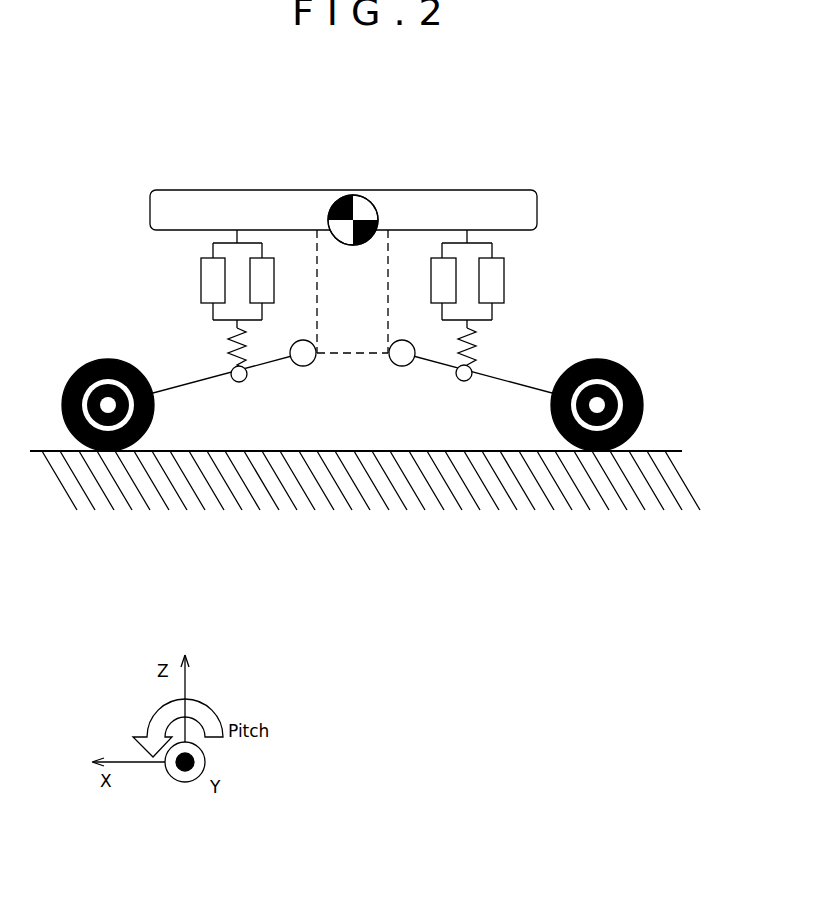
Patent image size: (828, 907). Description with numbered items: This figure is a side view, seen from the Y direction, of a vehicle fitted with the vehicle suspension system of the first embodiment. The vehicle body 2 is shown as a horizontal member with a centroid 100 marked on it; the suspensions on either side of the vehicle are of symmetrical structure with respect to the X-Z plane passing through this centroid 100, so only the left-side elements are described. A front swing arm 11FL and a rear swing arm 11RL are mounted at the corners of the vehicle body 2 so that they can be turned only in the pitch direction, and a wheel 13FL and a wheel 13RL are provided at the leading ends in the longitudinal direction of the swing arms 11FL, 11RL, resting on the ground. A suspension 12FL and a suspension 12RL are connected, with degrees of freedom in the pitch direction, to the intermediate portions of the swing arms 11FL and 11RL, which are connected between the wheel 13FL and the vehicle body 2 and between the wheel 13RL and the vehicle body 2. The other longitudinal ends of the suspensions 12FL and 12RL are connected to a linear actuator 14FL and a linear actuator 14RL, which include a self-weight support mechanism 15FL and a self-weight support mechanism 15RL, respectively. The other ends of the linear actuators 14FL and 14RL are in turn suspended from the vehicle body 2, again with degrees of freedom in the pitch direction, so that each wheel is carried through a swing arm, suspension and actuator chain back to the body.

The vehicle body 2 is at (413, 189).
The centroid 100 is at (368, 196).
The swing arm 11FL is at (155, 398).
The swing arm 11RL is at (538, 392).
The suspension 12FL is at (203, 381).
The suspension 12RL is at (495, 378).
The wheel 13FL is at (70, 376).
The wheel 13RL is at (642, 413).
The linear actuator 14FL is at (268, 258).
The linear actuator 14RL is at (505, 265).
The self-weight support mechanism 15FL is at (212, 258).
The self-weight support mechanism 15RL is at (448, 265).